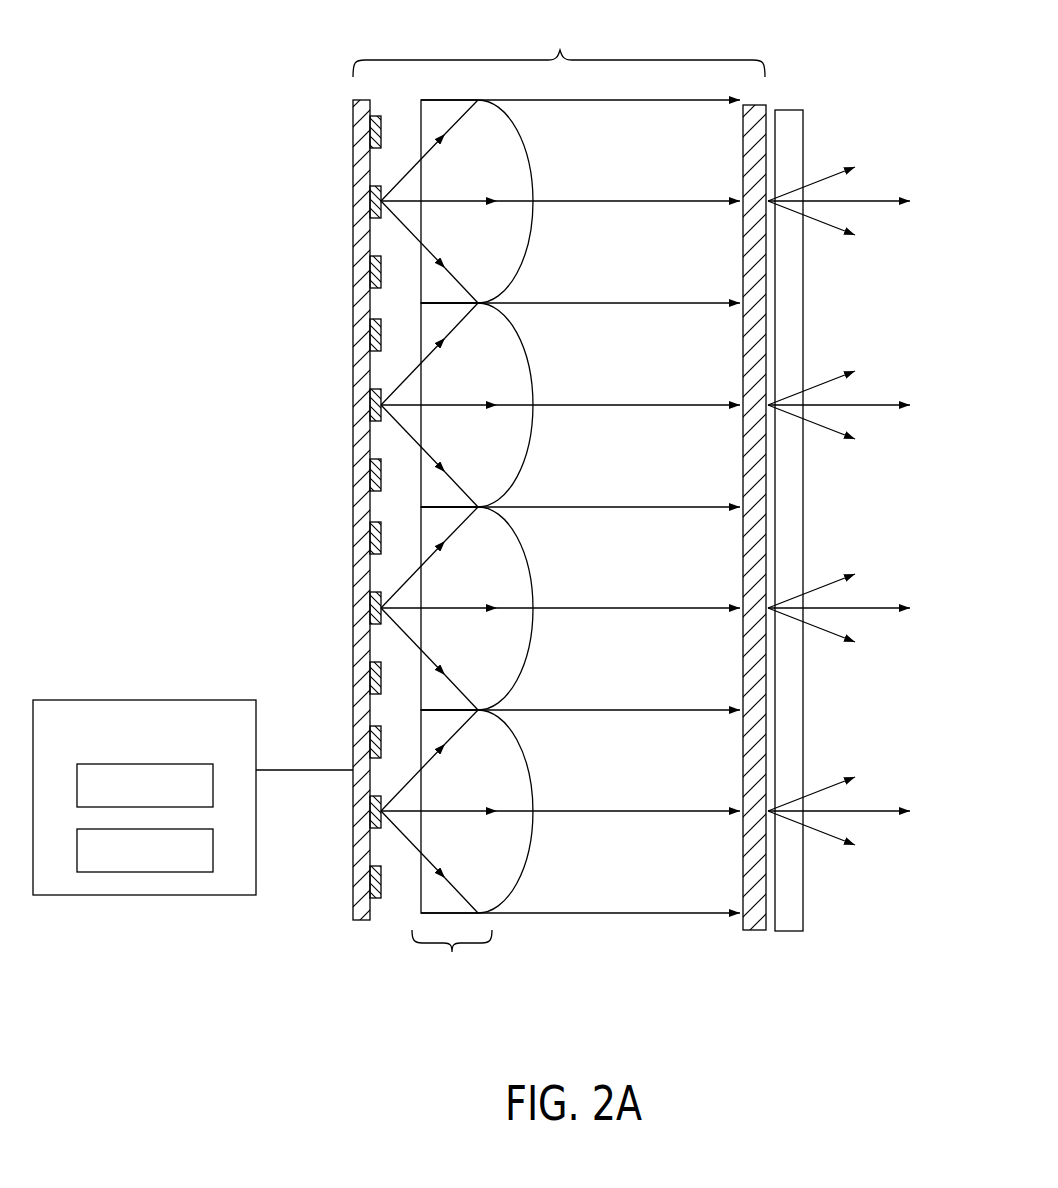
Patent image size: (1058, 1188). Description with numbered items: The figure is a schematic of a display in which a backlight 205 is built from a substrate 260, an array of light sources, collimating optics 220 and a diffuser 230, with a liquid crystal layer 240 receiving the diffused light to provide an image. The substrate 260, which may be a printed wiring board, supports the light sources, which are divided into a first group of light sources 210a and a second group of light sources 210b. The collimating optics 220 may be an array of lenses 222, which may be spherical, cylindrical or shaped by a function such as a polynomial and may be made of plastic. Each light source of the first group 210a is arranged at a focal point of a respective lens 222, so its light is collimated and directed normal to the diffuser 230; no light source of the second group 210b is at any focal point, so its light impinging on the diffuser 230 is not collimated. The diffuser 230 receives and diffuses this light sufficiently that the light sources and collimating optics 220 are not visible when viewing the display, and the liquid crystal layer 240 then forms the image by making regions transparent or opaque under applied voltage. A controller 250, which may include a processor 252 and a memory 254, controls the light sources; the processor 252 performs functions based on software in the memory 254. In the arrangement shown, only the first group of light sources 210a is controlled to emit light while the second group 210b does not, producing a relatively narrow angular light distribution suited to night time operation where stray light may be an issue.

The backlight 205 is at (559, 44).
The first group of light sources 210a is at (372, 217).
The second group of light sources 210b is at (372, 148).
The collimating optics 220 is at (452, 959).
The lens 222 is at (523, 466).
The diffuser 230 is at (755, 931).
The liquid crystal layer 240 is at (788, 931).
The controller 250 is at (78, 700).
The processor 252 is at (213, 793).
The memory 254 is at (213, 858).
The substrate 260 is at (362, 352).